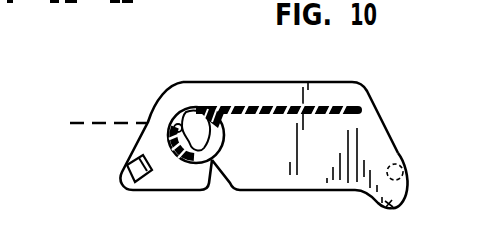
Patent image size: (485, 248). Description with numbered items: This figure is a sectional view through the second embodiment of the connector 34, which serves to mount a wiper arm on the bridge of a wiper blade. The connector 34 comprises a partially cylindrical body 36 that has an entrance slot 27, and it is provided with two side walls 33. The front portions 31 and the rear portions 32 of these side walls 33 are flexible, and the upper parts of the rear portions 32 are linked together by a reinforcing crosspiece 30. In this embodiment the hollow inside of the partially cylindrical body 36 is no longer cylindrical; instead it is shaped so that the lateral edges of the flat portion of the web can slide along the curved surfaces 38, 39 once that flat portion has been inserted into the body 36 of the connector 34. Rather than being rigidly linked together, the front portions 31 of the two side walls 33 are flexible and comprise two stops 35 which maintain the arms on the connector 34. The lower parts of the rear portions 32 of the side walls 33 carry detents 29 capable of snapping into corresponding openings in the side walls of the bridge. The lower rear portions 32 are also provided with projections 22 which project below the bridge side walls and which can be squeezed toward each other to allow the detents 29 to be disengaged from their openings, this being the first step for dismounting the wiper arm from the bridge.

The projection 22 is at (397, 206).
The entrance slot 27 is at (220, 178).
The detent 29 is at (398, 146).
The reinforcing crosspiece 30 is at (263, 106).
The front portion 31 is at (178, 178).
The rear portion 32 is at (317, 163).
The side wall 33 is at (335, 92).
The connector 34 is at (94, 122).
The stop 35 is at (125, 170).
The partially cylindrical body 36 is at (172, 121).
The curved surface 38 is at (179, 123).
The curved surface 39 is at (215, 122).